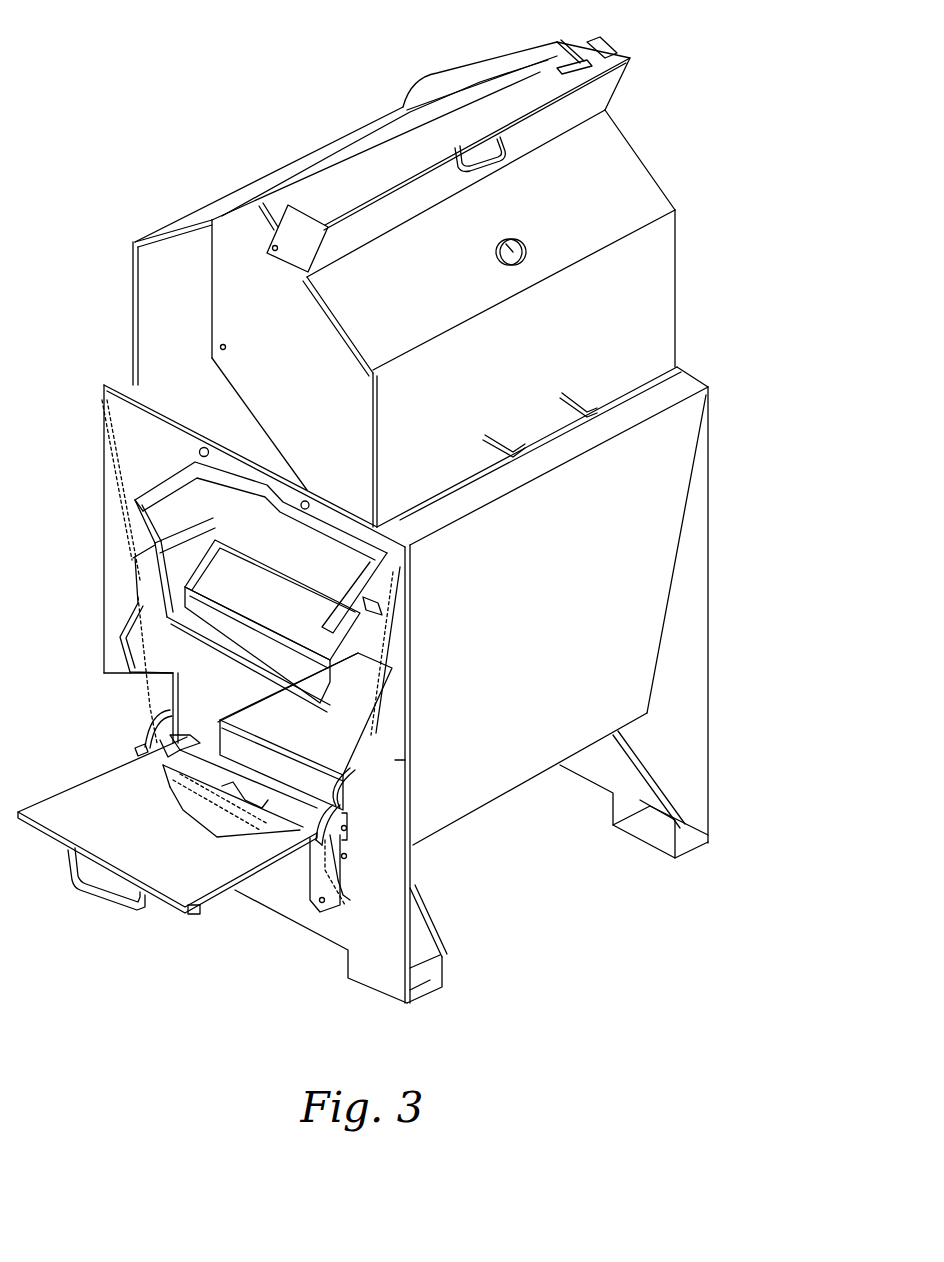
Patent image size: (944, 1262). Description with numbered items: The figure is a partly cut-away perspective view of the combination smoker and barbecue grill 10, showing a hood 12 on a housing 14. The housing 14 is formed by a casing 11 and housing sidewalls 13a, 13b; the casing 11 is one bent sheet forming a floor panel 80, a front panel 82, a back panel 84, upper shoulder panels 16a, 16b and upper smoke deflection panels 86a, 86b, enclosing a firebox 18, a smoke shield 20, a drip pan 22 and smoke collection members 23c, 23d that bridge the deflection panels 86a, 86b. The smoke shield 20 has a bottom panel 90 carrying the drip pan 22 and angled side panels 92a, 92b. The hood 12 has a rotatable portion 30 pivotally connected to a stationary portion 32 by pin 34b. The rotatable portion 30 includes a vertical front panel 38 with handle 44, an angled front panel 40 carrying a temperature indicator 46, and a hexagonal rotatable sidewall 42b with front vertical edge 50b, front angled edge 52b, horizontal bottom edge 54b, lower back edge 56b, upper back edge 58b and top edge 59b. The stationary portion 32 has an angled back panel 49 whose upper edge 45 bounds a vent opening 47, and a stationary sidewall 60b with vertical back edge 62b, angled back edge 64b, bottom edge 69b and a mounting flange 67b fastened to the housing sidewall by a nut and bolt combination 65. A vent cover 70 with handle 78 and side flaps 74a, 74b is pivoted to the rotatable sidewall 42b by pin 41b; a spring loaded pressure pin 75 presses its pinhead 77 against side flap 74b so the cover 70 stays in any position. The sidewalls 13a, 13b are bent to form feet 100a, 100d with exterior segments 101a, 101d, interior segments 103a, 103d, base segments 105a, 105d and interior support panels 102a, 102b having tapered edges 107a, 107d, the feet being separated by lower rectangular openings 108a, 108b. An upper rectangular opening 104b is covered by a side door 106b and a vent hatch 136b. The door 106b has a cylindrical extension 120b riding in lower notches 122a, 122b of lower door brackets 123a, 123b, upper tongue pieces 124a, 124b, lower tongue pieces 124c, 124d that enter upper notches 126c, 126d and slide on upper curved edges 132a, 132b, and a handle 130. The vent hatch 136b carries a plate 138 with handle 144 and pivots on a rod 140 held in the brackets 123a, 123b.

The combination smoker and barbecue grill 10 is at (726, 275).
The casing 11 is at (453, 828).
The hood 12 is at (668, 150).
The housing sidewall 13a is at (662, 715).
The housing sidewall 13b is at (363, 807).
The housing 14 is at (722, 600).
The upper shoulder panel 16a is at (688, 390).
The upper shoulder panel 16b is at (108, 385).
The firebox 18 is at (328, 728).
The smoke shield 20 is at (228, 662).
The drip pan 22 is at (265, 613).
The smoke collection member 23c is at (310, 530).
The smoke collection member 23d is at (237, 535).
The rotatable portion 30 is at (677, 228).
The stationary portion 32 is at (133, 290).
The pin 34b is at (226, 347).
The vertical front panel 38 is at (508, 375).
The angled front panel 40 is at (576, 203).
The pin 41b is at (272, 252).
The rotatable sidewall 42b is at (280, 395).
The handle 44 is at (555, 435).
The upper edge 45 is at (410, 99).
The temperature indicator 46 is at (505, 245).
The vent opening 47 is at (480, 65).
The angled back panel 49 is at (337, 140).
The front vertical edge 50b is at (370, 445).
The front angled edge 52b is at (350, 325).
The horizontal bottom edge 54b is at (316, 500).
The lower back edge 56b is at (240, 395).
The upper back edge 58b is at (212, 270).
The top edge 59b is at (235, 213).
The stationary sidewall 60b is at (158, 347).
The vertical back edge 62b is at (137, 356).
The angled back edge 64b is at (198, 225).
The nut and bolt combination 65 is at (199, 454).
The mounting flange 67b is at (255, 488).
The bottom edge 69b is at (255, 448).
The vent cover 70 is at (628, 90).
The side flap 74a is at (630, 58).
The side flap 74b is at (320, 248).
The spring loaded pressure pin 75 is at (556, 52).
The pinhead 77 is at (600, 40).
The handle 78 is at (490, 170).
The floor panel 80 is at (283, 768).
The front panel 82 is at (525, 620).
The back panel 84 is at (228, 698).
The upper smoke deflection panel 86a is at (400, 598).
The upper smoke deflection panel 86b is at (120, 505).
The bottom panel 90 is at (198, 638).
The angled side panel 92a is at (408, 672).
The angled side panel 92b is at (130, 580).
The foot 100a is at (650, 878).
The foot 100d is at (340, 988).
The exterior segment 101a is at (690, 818).
The exterior segment 101d is at (385, 985).
The interior support panel 102a is at (580, 768).
The interior support panel 102b is at (430, 930).
The interior segment 103a is at (623, 827).
The interior segment 103d is at (440, 968).
The upper rectangular opening 104b is at (160, 765).
The base segment 105a is at (700, 848).
The base segment 105d is at (420, 1005).
The side door 106b is at (122, 865).
The tapered edge 107a is at (630, 745).
The tapered edge 107d is at (425, 905).
The lower rectangular opening 108a is at (597, 795).
The lower rectangular opening 108b is at (250, 925).
The cylindrical extension 120b is at (347, 830).
The lower notch 122a is at (168, 723).
The lower notch 122b is at (348, 856).
The lower door bracket 123a is at (138, 748).
The lower door bracket 123b is at (320, 915).
The tongue piece 124a is at (55, 800).
The tongue piece 124b is at (190, 922).
The tongue piece 124c is at (315, 893).
The tongue piece 124d is at (160, 740).
The upper notch 126c is at (403, 777).
The upper notch 126d is at (165, 712).
The handle 130 is at (95, 920).
The upper curved edge 132a is at (162, 745).
The upper curved edge 132b is at (320, 805).
The vent hatch 136b is at (158, 792).
The elongated rectangular plate 138 is at (185, 805).
The elongated cylindrical rod 140 is at (225, 825).
The handle 144 is at (205, 800).